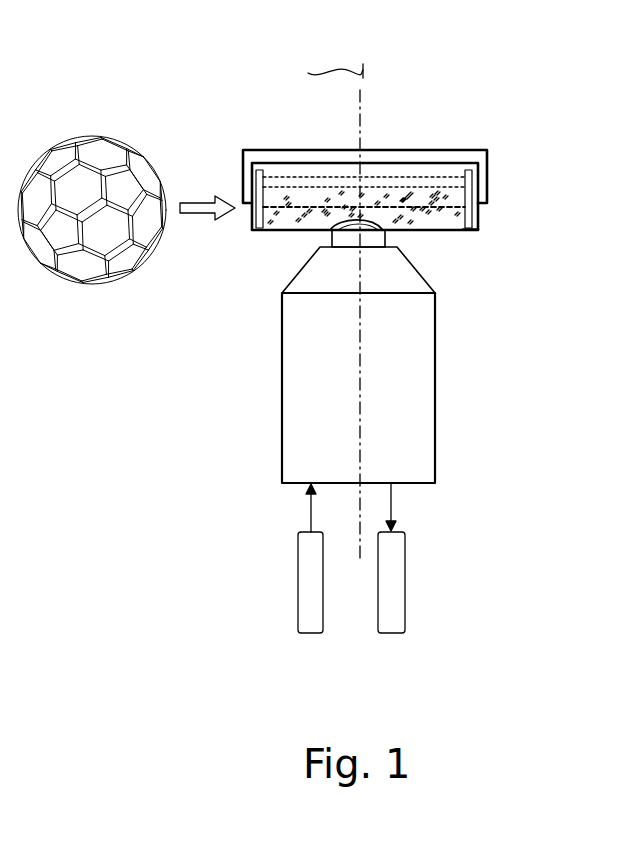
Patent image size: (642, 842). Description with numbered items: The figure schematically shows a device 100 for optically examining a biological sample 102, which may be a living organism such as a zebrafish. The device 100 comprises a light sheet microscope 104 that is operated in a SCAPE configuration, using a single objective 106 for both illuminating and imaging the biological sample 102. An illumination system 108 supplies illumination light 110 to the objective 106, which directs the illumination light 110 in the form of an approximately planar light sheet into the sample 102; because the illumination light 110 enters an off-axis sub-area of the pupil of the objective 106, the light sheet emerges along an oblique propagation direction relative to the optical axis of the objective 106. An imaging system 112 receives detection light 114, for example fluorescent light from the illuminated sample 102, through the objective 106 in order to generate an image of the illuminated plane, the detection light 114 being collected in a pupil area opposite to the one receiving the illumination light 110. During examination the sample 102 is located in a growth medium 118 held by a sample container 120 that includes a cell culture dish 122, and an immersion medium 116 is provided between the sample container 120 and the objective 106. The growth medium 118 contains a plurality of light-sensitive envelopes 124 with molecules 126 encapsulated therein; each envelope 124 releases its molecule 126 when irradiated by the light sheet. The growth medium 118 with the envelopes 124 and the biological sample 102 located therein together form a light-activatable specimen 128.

The device 100 is at (502, 33).
The biological sample 102 is at (330, 232).
The light sheet microscope 104 is at (553, 522).
The objective 106 is at (282, 437).
The illumination system 108 is at (305, 641).
The illumination light 110 is at (311, 513).
The imaging system 112 is at (408, 620).
The detection light 114 is at (392, 520).
The immersion medium 116 is at (377, 243).
The growth medium 118 is at (287, 200).
The sample container 120 is at (243, 199).
The cell culture dish 122 is at (477, 218).
The light-sensitive envelope 124 is at (118, 143).
The molecule 126 is at (100, 247).
The light-activatable specimen 128 is at (440, 185).